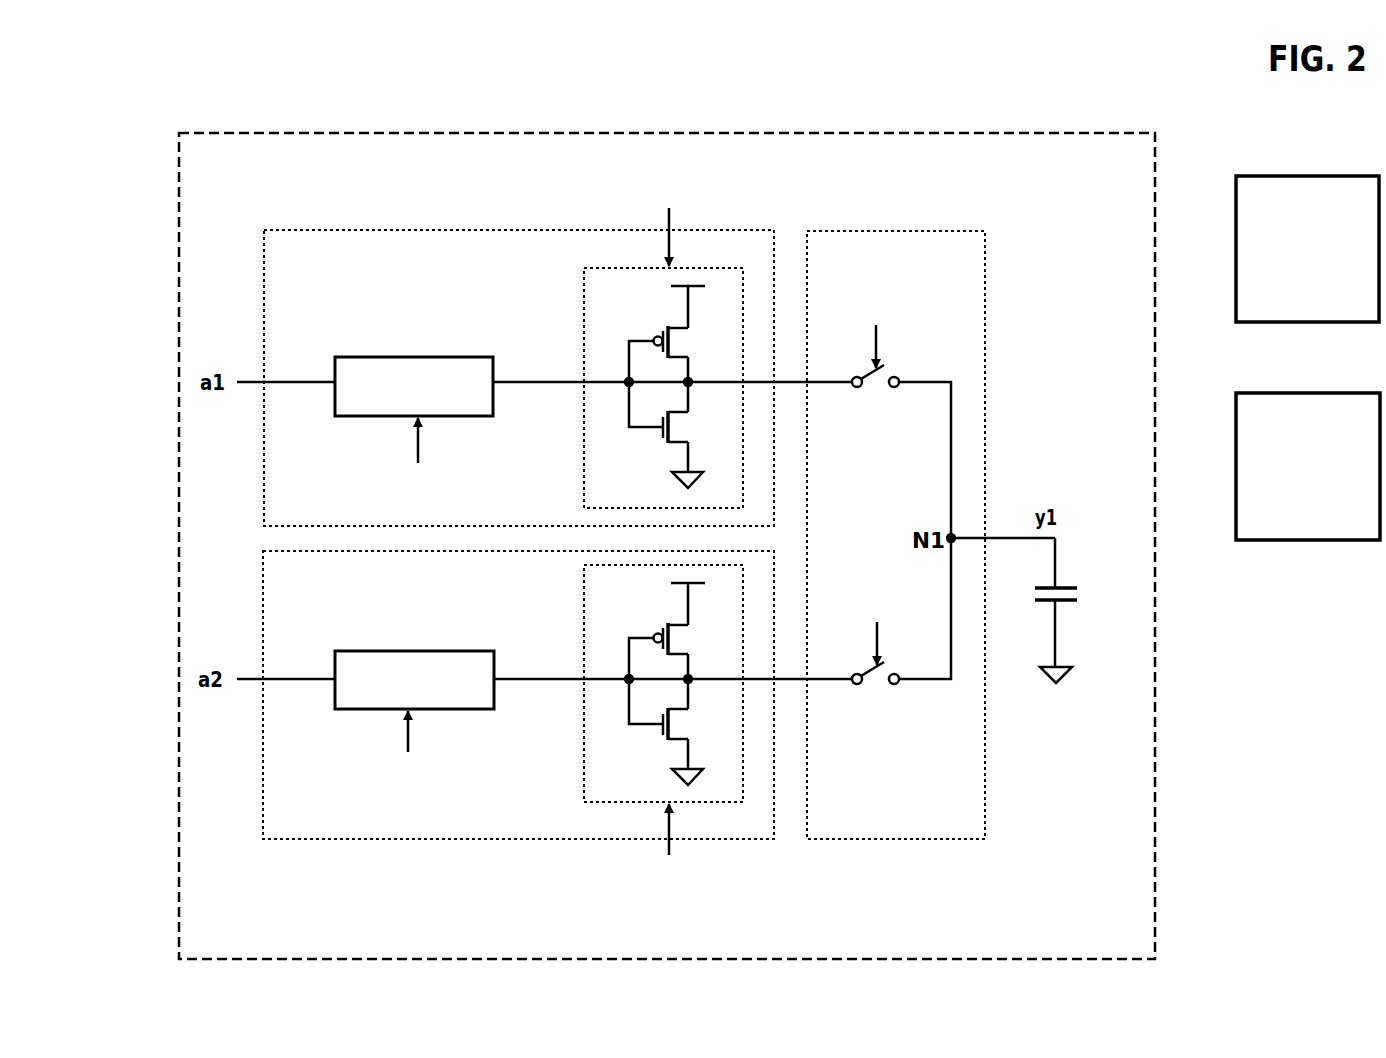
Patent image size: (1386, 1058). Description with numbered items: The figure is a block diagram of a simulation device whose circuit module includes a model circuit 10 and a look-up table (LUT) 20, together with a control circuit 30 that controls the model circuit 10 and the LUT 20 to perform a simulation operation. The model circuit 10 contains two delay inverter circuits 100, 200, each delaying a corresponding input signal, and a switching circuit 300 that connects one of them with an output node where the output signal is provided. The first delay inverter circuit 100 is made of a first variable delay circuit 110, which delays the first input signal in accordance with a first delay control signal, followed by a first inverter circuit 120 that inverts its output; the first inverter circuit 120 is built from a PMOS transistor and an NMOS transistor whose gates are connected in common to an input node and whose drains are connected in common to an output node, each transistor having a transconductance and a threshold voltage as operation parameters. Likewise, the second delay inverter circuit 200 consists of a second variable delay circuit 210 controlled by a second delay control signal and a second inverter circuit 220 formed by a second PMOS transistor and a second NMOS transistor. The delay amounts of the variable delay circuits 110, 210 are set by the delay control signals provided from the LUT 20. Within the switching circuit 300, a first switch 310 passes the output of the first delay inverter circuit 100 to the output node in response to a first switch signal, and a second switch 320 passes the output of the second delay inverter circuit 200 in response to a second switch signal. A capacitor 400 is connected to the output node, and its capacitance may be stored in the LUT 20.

The model circuit 10 is at (179, 262).
The look-up table (LUT) 20 is at (1302, 176).
The control circuit 30 is at (1307, 540).
The first delay inverter circuit 100 is at (336, 230).
The first variable delay circuit 110 is at (418, 357).
The first inverter circuit 120 is at (584, 312).
The second delay inverter circuit 200 is at (352, 839).
The second variable delay circuit 210 is at (418, 651).
The second inverter circuit 220 is at (584, 772).
The switching circuit 300 is at (910, 231).
The first switch 310 is at (869, 397).
The second switch 320 is at (875, 691).
The capacitor 400 is at (1058, 587).